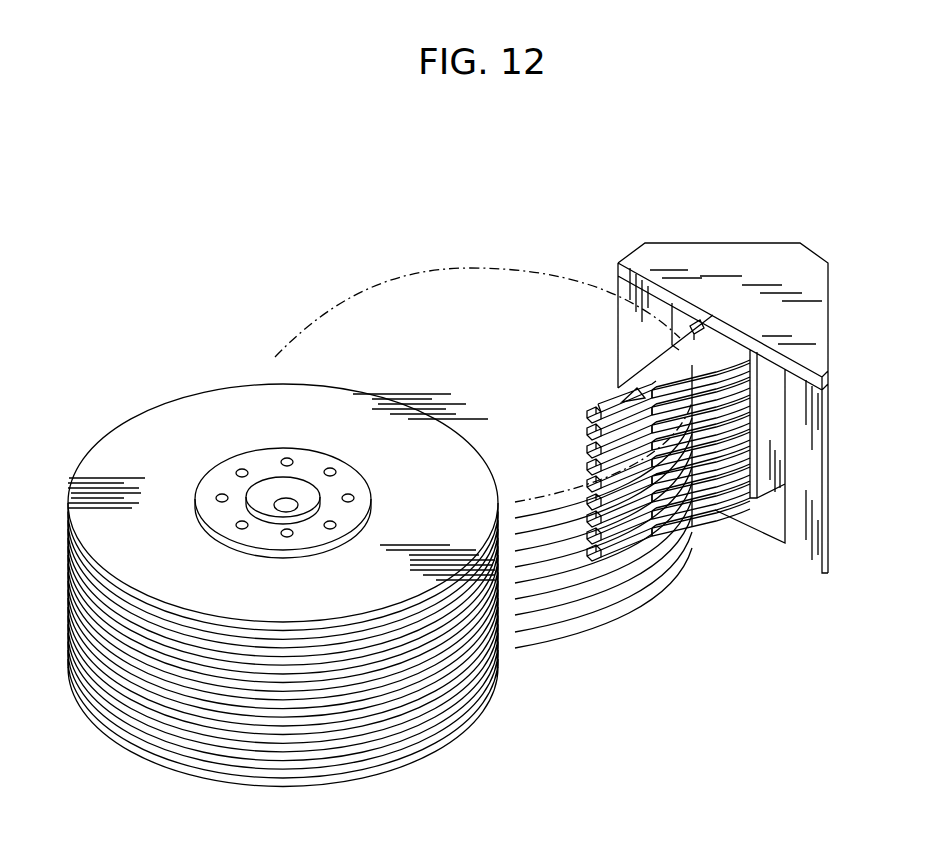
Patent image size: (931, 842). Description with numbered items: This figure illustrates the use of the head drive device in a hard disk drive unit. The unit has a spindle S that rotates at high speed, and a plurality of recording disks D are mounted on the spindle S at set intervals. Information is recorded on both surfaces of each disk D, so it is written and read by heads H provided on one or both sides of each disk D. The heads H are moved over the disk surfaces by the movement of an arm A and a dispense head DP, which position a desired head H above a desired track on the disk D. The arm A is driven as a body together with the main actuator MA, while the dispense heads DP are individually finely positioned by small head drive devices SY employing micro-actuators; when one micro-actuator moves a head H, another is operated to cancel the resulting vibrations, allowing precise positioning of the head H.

The recording disk D is at (160, 432).
The spindle S is at (263, 497).
The main actuator MA is at (705, 227).
The arm A is at (660, 372).
The small head drive device SY is at (643, 392).
The dispense head DP is at (608, 398).
The head H is at (590, 408).